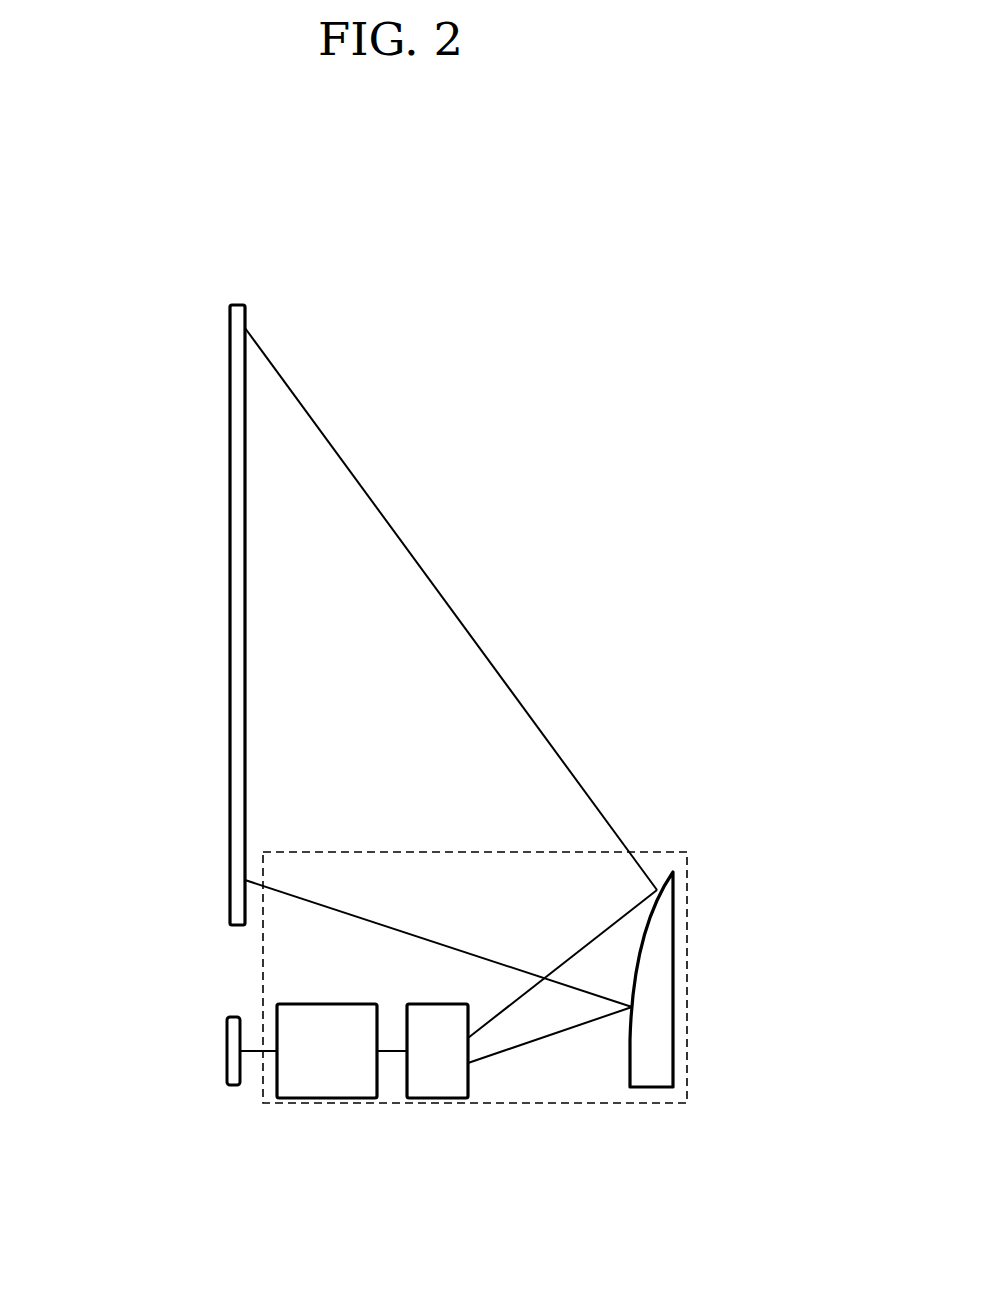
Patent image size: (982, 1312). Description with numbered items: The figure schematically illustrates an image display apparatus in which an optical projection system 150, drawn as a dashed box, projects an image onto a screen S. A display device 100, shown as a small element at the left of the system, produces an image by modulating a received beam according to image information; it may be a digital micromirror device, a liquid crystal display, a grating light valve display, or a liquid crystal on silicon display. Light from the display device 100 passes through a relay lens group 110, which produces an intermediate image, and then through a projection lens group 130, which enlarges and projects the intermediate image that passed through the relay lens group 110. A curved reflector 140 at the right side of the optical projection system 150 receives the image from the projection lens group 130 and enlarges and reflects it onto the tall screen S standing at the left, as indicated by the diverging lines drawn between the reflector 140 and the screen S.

The screen S is at (230, 578).
The display device 100 is at (233, 1085).
The relay lens group 110 is at (340, 1098).
The projection lens group 130 is at (447, 1098).
The reflector 140 is at (653, 1087).
The optical projection system 150 is at (667, 839).